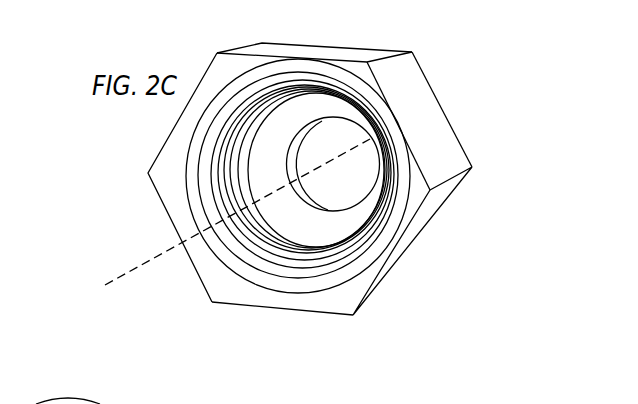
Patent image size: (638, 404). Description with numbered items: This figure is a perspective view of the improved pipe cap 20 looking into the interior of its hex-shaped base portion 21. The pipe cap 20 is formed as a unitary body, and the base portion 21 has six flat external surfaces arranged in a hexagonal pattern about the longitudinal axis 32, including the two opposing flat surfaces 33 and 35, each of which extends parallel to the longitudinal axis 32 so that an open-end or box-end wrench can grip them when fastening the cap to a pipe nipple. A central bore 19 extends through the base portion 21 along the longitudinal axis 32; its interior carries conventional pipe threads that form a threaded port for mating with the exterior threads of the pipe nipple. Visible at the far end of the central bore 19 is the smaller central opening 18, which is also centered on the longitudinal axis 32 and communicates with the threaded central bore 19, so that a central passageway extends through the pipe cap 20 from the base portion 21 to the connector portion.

The central opening 18 is at (338, 198).
The central bore 19 is at (281, 281).
The pipe cap 20 is at (452, 71).
The base portion 21 is at (432, 233).
The longitudinal axis 32 is at (133, 267).
The flat surface 33 is at (270, 43).
The flat surface 35 is at (332, 317).